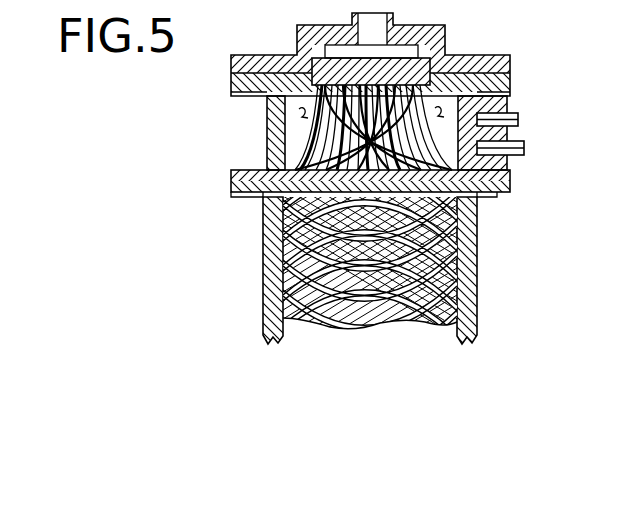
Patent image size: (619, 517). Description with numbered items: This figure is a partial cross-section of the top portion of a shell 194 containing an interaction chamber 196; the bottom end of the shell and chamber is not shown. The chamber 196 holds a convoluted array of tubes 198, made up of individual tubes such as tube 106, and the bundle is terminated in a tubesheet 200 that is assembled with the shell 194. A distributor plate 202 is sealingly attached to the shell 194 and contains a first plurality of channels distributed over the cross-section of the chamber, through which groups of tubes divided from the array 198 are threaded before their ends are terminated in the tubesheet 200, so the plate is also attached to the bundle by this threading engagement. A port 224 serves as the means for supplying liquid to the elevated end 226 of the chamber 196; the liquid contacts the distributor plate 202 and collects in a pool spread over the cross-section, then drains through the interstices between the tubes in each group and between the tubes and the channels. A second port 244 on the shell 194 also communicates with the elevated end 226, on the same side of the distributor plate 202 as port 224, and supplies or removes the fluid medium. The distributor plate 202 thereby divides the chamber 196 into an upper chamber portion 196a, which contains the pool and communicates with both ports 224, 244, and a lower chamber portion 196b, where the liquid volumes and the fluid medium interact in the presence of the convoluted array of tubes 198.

The tube 106 is at (297, 275).
The shell 194 is at (220, 85).
The interaction chamber 196 is at (303, 118).
The upper chamber portion 196a is at (458, 98).
The lower chamber portion 196b is at (417, 320).
The convoluted array of tubes 198 is at (447, 267).
The tubesheet 200 is at (333, 72).
The distributor plate 202 is at (500, 185).
The port 224 is at (523, 151).
The elevated end 226 is at (262, 113).
The port 244 is at (517, 122).